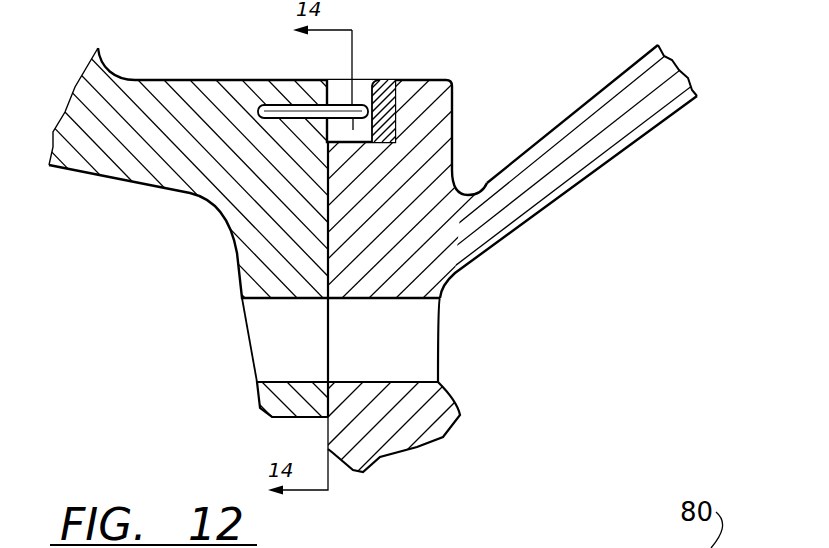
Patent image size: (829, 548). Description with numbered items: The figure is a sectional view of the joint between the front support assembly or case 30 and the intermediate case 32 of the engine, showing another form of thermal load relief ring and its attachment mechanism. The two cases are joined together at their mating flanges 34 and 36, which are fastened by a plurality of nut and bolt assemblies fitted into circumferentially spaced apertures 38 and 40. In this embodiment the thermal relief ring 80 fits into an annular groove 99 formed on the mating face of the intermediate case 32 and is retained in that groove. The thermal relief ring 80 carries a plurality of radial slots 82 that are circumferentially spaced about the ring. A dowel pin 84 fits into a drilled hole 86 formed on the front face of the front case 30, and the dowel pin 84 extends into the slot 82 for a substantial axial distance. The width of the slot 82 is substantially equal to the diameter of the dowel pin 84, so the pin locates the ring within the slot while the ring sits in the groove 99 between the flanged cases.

The front support assembly or case 30 is at (192, 207).
The intermediate case 32 is at (641, 153).
The mating flange 34 is at (238, 276).
The mating flange 36 is at (558, 203).
The circumferentially spaced aperture 38 is at (276, 382).
The circumferentially spaced aperture 40 is at (412, 382).
The thermal relief ring 80 is at (337, 82).
The radial slot 82 is at (374, 88).
The dowel pin 84 is at (362, 106).
The drilled hole 86 is at (257, 106).
The annular groove 99 is at (442, 100).